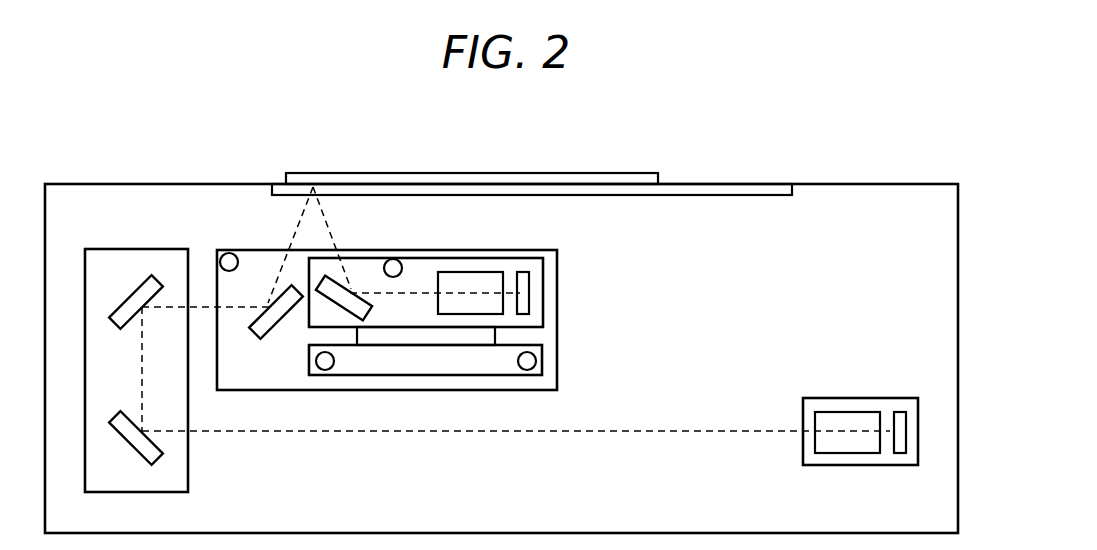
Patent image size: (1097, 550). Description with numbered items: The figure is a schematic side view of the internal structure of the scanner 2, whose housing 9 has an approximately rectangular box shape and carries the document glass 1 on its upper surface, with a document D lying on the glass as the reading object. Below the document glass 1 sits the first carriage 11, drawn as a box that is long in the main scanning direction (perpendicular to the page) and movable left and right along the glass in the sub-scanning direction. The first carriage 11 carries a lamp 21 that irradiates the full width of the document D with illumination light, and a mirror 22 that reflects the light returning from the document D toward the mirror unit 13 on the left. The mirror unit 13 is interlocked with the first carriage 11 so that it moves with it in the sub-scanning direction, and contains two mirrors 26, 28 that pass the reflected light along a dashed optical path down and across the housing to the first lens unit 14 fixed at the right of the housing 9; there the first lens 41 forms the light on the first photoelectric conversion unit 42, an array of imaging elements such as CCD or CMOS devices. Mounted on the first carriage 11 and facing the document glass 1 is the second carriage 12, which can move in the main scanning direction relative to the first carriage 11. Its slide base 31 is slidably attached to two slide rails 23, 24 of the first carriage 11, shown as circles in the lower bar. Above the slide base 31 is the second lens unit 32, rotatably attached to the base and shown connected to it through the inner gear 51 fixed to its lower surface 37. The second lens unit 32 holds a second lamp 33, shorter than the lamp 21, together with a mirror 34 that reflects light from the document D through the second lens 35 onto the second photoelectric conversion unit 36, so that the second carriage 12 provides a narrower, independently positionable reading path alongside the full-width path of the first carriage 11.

The scanner 2 is at (893, 140).
The housing 9 is at (78, 183).
The document D is at (404, 173).
The document glass 1 is at (722, 184).
The mirror unit 13 is at (93, 249).
The mirror 26 is at (136, 277).
The mirror 28 is at (121, 445).
The first carriage 11 is at (246, 250).
The lamp 21 is at (222, 254).
The mirror 22 is at (263, 340).
The second carriage 12 is at (616, 277).
The second lens unit 32 is at (543, 290).
The lamp 33 is at (393, 259).
The second lens 35 is at (468, 272).
The second photoelectric conversion unit 36 is at (523, 272).
The mirror 34 is at (376, 318).
The slide base 31 is at (543, 355).
The slide rail 23 is at (328, 371).
The slide rail 24 is at (527, 371).
The inner gear 51 is at (423, 332).
The lower surface 37 is at (468, 327).
The first lens unit 14 is at (893, 398).
The first lens 41 is at (835, 412).
The first photoelectric conversion unit 42 is at (900, 453).